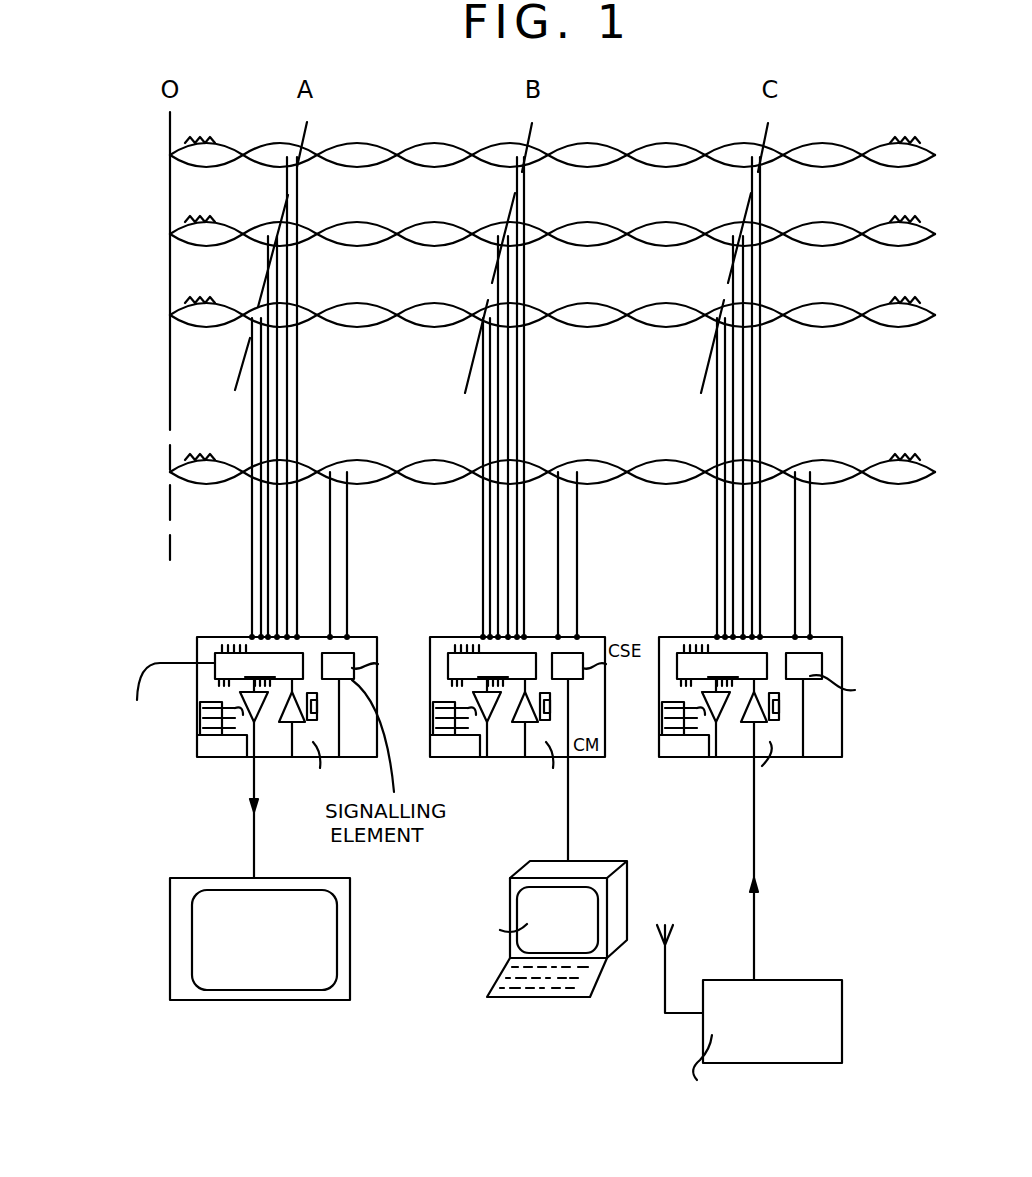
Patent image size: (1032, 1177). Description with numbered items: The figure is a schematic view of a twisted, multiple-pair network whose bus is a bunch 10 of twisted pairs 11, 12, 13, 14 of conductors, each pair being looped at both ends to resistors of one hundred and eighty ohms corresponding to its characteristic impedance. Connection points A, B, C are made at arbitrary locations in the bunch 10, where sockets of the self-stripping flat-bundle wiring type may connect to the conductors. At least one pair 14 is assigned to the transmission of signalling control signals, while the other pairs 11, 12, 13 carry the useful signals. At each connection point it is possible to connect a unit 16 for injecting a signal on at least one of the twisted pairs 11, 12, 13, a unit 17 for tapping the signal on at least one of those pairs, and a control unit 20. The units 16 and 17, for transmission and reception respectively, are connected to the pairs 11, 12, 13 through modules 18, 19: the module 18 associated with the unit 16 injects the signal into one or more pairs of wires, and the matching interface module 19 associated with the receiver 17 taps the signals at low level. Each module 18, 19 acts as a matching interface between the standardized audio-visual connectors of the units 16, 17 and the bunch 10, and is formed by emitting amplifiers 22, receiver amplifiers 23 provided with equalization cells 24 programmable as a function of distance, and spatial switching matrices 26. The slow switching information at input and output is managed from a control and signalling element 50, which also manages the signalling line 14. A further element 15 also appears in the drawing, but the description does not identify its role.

The bunch of twisted pairs 10 is at (426, 152).
The twisted pair 11 is at (597, 155).
The twisted pair 12 is at (597, 234).
The twisted pair 13 is at (597, 316).
The signalling pair 14 is at (597, 471).
The terminating impedance Zc 15 is at (203, 317).
The injection unit 16 is at (818, 982).
The tapping unit 17 is at (350, 893).
The module 18 is at (837, 666).
The matching interface module 19 is at (200, 652).
The control unit 20 is at (622, 862).
The emitting amplifiers 22 is at (531, 733).
The receiver amplifiers 23 is at (716, 712).
The equalization cells 24 is at (659, 700).
The spatial switching matrices 26 is at (410, 701).
The control and signalling element 50 is at (577, 655).